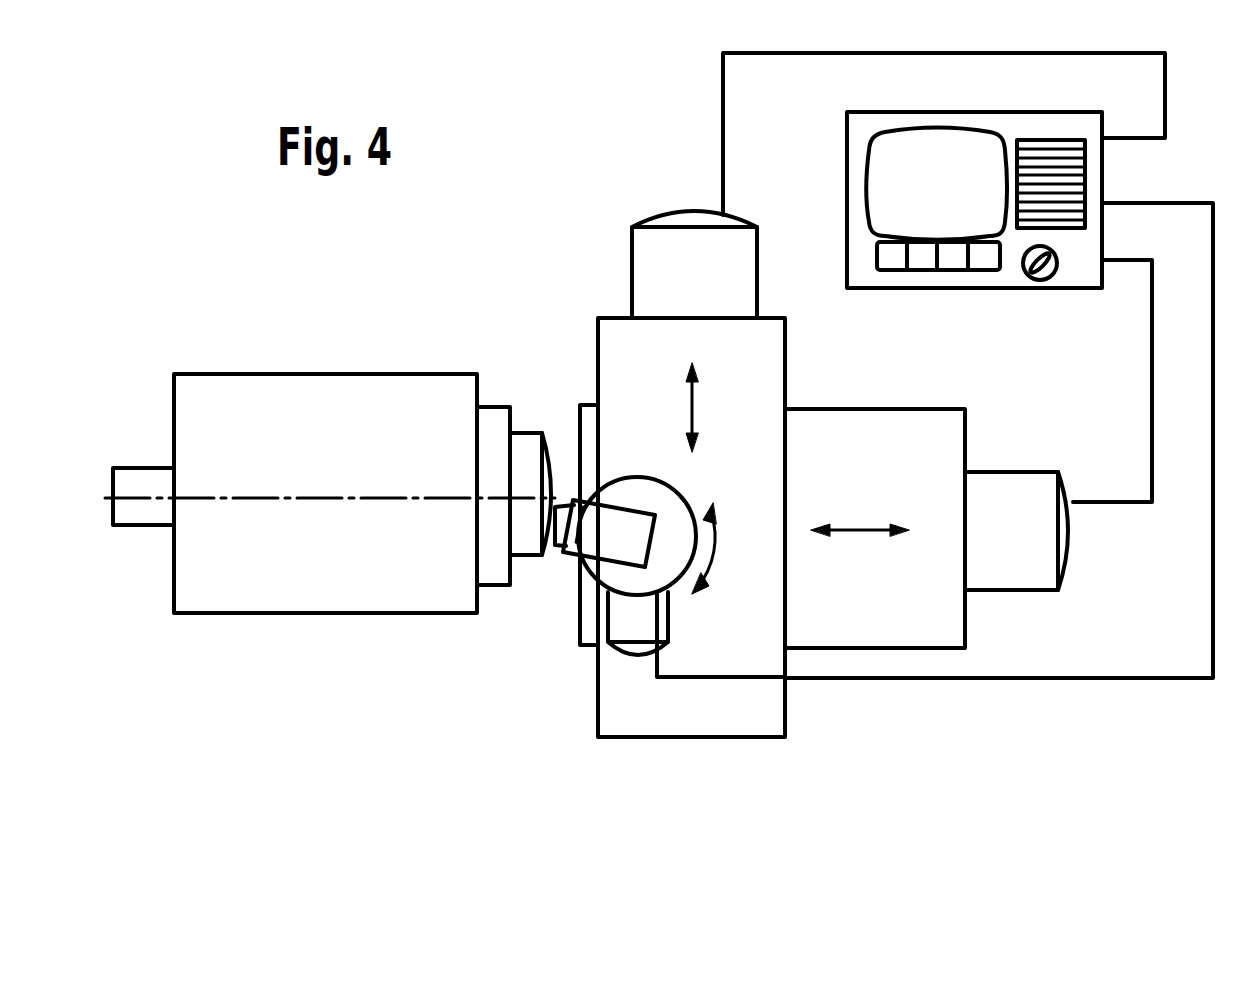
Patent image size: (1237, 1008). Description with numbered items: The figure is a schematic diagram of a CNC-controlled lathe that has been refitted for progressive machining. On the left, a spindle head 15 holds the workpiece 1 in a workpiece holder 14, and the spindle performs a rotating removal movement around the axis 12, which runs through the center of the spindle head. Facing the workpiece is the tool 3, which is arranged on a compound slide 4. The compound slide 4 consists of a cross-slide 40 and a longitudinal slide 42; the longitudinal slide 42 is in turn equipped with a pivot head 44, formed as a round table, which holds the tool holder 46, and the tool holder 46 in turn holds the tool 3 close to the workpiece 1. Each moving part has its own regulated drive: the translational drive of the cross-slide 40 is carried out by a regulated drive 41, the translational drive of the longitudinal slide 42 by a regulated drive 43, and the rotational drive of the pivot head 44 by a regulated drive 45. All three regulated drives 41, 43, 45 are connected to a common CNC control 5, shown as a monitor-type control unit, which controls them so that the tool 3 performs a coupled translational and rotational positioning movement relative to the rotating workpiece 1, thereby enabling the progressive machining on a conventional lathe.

The workpiece 1 is at (528, 458).
The tool 3 is at (556, 552).
The compound slide 4 is at (791, 503).
The CNC control 5 is at (1012, 137).
The axis 12 is at (325, 500).
The workpiece holder 14 is at (493, 430).
The spindle head 15 is at (317, 435).
The cross-slide 40 is at (750, 700).
The regulated drive 41 is at (665, 255).
The longitudinal slide 42 is at (887, 593).
The regulated drive 43 is at (998, 500).
The pivot head 44 is at (604, 571).
The regulated drive 45 is at (630, 628).
The tool holder 46 is at (610, 520).